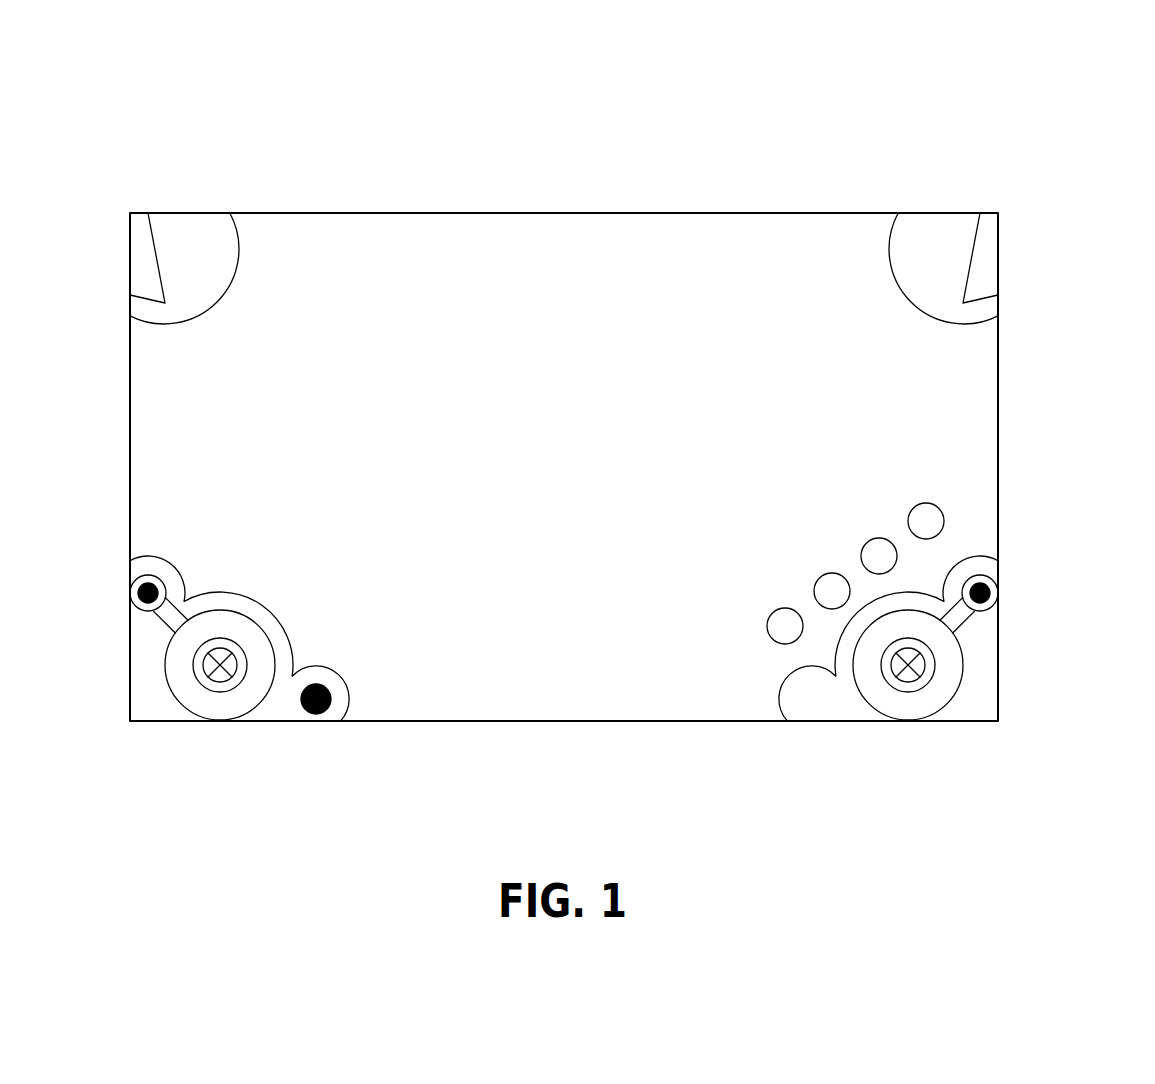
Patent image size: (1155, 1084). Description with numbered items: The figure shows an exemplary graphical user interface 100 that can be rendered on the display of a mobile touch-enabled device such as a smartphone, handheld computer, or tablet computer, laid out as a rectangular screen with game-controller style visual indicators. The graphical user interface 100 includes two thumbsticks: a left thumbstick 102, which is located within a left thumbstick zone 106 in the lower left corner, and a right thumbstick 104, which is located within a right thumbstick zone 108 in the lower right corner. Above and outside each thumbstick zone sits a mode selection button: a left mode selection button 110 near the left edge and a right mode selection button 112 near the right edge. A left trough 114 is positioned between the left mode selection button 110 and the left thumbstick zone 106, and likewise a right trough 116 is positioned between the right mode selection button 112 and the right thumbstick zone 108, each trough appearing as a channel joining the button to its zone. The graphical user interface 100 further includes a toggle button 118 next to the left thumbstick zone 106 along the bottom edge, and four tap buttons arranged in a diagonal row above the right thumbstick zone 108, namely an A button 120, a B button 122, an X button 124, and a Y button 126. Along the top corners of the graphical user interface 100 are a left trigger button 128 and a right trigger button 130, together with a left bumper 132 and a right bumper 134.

The graphical user interface 100 is at (109, 137).
The left thumbstick 102 is at (194, 667).
The right thumbstick 104 is at (935, 668).
The left thumbstick zone 106 is at (167, 679).
The right thumbstick zone 108 is at (960, 683).
The left mode selection button 110 is at (145, 590).
The right mode selection button 112 is at (982, 591).
The left trough 114 is at (165, 619).
The right trough 116 is at (968, 620).
The toggle button 118 is at (310, 712).
The A button 120 is at (775, 612).
The B button 122 is at (820, 578).
The X button 124 is at (865, 545).
The Y button 126 is at (913, 507).
The left trigger button 128 is at (153, 240).
The right trigger button 130 is at (973, 240).
The left bumper 132 is at (238, 252).
The right bumper 134 is at (890, 248).